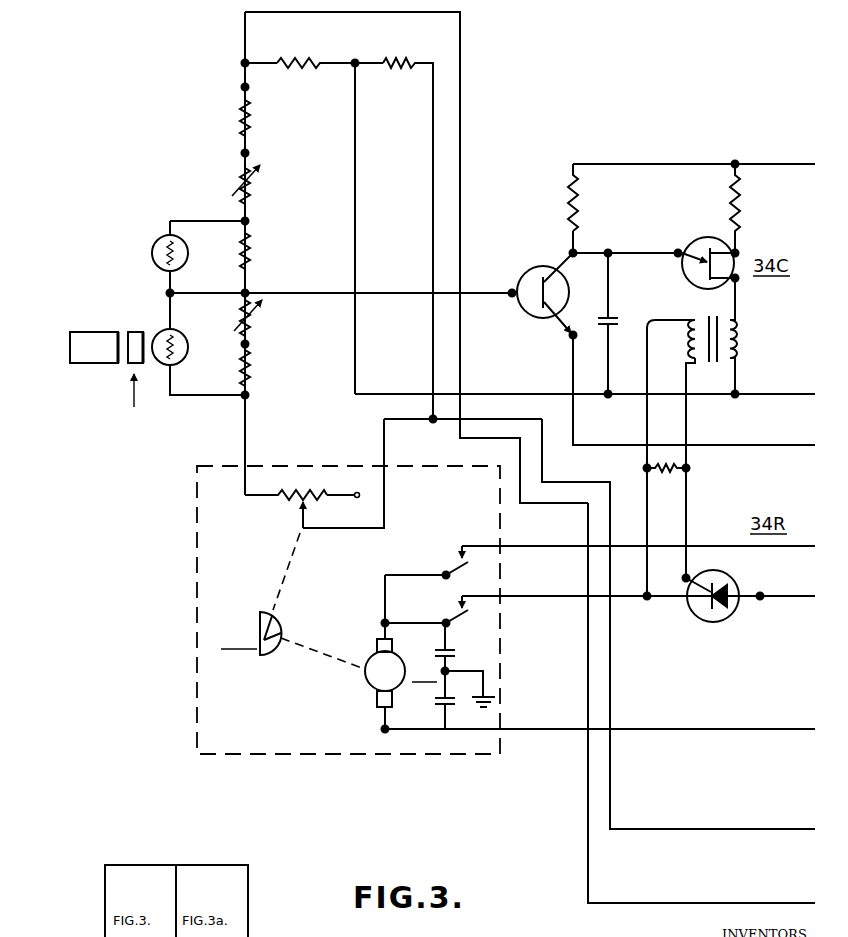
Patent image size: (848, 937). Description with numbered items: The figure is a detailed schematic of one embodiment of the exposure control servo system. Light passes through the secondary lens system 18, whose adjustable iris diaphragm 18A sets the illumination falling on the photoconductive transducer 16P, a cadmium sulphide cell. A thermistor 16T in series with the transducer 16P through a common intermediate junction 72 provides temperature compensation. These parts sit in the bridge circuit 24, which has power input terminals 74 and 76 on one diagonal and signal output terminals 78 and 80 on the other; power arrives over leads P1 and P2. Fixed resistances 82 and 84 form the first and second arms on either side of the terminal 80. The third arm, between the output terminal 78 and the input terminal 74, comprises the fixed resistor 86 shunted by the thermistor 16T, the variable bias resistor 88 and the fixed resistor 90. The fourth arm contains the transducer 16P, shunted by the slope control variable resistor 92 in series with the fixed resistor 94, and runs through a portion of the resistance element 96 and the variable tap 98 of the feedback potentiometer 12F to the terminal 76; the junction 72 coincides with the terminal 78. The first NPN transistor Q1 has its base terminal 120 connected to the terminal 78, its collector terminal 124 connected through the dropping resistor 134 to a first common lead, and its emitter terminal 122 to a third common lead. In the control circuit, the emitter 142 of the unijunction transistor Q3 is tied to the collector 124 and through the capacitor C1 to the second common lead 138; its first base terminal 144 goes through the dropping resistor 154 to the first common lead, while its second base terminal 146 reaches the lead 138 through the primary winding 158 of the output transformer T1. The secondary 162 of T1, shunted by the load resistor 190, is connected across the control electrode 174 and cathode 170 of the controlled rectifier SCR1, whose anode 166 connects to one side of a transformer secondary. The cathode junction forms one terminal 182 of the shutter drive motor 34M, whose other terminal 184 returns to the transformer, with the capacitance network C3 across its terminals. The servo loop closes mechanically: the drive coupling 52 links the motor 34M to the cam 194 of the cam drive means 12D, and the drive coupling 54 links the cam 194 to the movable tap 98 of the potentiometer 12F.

The bridge circuit 24 is at (406, 216).
The first power input terminal 74 is at (243, 63).
The fixed resistance 82 is at (311, 63).
The second signal output terminal 80 is at (356, 62).
The fixed resistance 84 is at (404, 63).
The fixed resistor 90 is at (249, 122).
The variable bias resistor 88 is at (252, 186).
The fixed resistor 86 is at (250, 247).
The first signal output terminal 78 is at (249, 291).
The illumination response slope control variable resistor 92 is at (252, 330).
The fixed resistor 94 is at (252, 380).
The thermistor 16T is at (163, 240).
The common intermediate junction 72 is at (167, 292).
The photoconductive transducer 16P is at (180, 363).
The secondary lens system 18 is at (99, 373).
The adjustable iris diaphragm 18A is at (135, 331).
The base terminal 120 is at (509, 297).
The first NPN transistor Q1 is at (531, 270).
The collector terminal 124 is at (571, 251).
The dropping resistor 134 is at (571, 192).
The emitter terminal 122 is at (571, 336).
The capacitor C1 is at (613, 316).
The emitter terminal 142 is at (676, 249).
The first unijunction transistor Q3 is at (715, 237).
The dropping resistor 154 is at (733, 190).
The first base terminal 144 is at (738, 250).
The second base terminal 146 is at (738, 281).
The first output transformer T1 is at (690, 326).
The secondary winding 162 is at (690, 350).
The primary winding 158 is at (737, 351).
The second common lead 138 is at (780, 396).
The second power input terminal 76 is at (432, 415).
The load resistor 190 is at (673, 473).
The control electrode 174 is at (689, 577).
The cathode electrode 170 is at (648, 599).
The first silicon controlled rectifier SCR1 is at (721, 608).
The anode electrode 166 is at (762, 593).
The feedback potentiometer 12F is at (298, 504).
The resistance element 96 is at (312, 488).
The variable tap 98 is at (307, 509).
The drive coupling 54 is at (292, 554).
The cam drive means 12D is at (251, 633).
The cam 194 is at (256, 620).
The mechanical drive coupling 52 is at (334, 660).
The motor terminal 182 is at (382, 623).
The shutter drive motor 34M is at (373, 693).
The motor terminal 184 is at (382, 730).
The capacitance network C3 is at (453, 676).
The power lead P1 is at (660, 902).
The power lead P2 is at (660, 828).